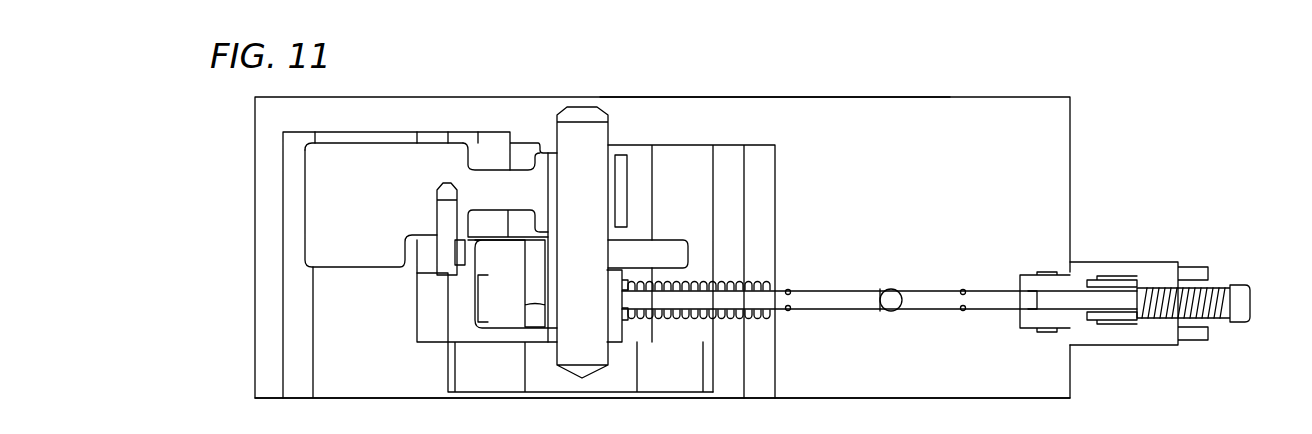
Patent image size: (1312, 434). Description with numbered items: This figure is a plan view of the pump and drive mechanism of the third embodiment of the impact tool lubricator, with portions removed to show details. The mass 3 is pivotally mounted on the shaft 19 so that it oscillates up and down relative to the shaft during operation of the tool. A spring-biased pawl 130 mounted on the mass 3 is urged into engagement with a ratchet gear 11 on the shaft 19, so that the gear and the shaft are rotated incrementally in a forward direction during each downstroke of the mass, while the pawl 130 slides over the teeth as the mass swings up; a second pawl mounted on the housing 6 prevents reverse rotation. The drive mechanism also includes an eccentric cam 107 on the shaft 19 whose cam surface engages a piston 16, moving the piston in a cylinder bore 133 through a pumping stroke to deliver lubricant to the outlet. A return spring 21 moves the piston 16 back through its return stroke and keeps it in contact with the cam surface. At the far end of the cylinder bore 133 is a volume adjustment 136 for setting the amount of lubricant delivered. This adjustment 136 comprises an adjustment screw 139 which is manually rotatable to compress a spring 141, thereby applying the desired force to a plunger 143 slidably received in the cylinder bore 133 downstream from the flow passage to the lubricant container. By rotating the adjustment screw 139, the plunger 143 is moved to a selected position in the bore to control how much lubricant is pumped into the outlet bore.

The mass 3 is at (318, 187).
The housing 6 is at (763, 108).
The ratchet gear 11 is at (670, 247).
The piston 16 is at (837, 300).
The shaft 19 is at (582, 127).
The return spring 21 is at (762, 282).
The eccentric cam 107 is at (618, 308).
The spring-biased pawl 130 is at (432, 265).
The cylinder bore 133 is at (887, 292).
The volume adjustment 136 is at (1133, 272).
The adjustment screw 139 is at (1220, 328).
The spring 141 is at (1167, 318).
The plunger 143 is at (1078, 305).